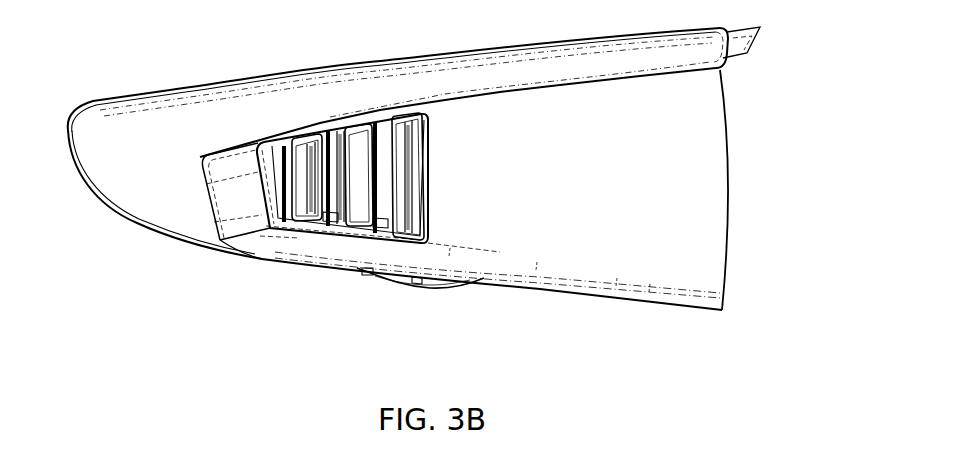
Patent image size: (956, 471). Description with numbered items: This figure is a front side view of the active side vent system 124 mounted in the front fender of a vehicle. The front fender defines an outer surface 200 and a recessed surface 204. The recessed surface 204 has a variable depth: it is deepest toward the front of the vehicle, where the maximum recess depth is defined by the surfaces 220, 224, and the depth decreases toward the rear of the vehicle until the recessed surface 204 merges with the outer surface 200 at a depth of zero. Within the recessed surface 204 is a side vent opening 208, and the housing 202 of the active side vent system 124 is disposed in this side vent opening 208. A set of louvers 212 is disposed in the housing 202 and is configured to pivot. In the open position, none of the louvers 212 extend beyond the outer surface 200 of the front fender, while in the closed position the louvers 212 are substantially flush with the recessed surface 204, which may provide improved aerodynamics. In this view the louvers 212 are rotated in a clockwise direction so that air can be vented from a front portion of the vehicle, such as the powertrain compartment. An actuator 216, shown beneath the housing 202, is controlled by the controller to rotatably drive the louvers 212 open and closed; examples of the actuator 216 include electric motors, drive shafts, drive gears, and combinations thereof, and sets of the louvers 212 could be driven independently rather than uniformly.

The active side vent system 124 is at (167, 318).
The outer surface 200 is at (118, 183).
The housing 202 is at (273, 158).
The recessed surface 204 is at (600, 257).
The side vent opening 208 is at (282, 158).
The louvers 212 is at (410, 162).
The actuator 216 is at (362, 271).
The surface 220 is at (268, 237).
The surface 224 is at (245, 197).